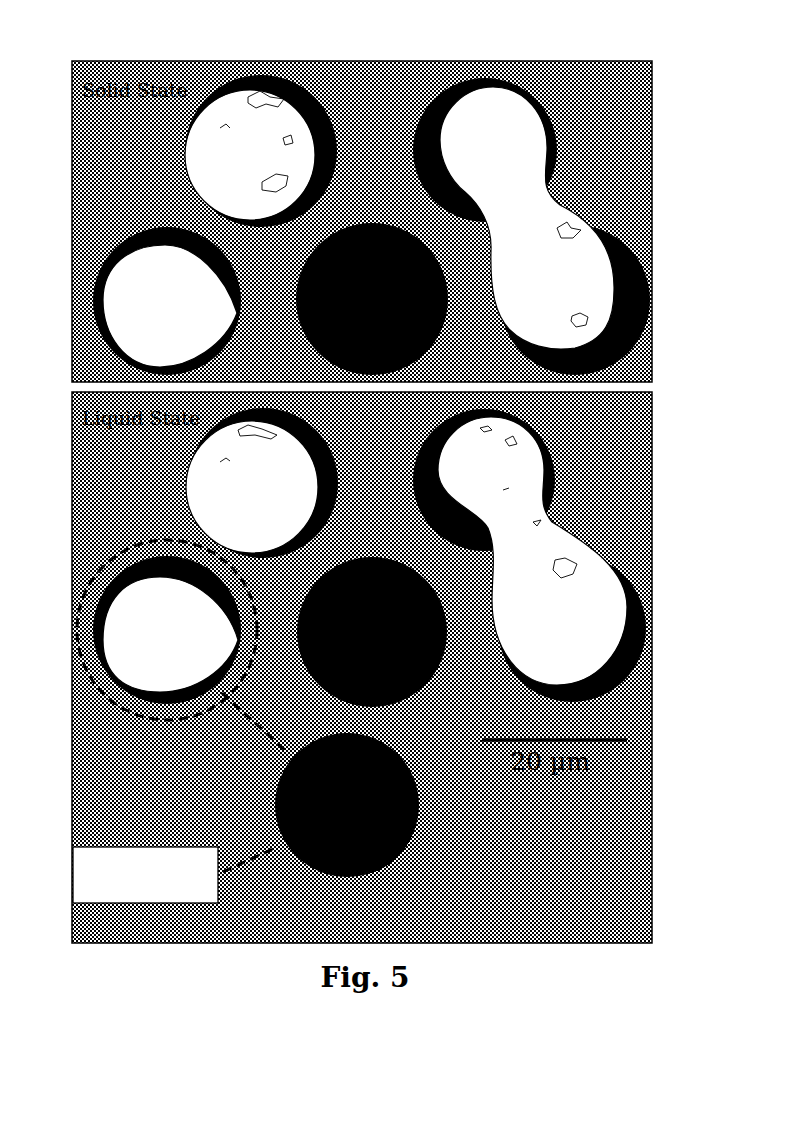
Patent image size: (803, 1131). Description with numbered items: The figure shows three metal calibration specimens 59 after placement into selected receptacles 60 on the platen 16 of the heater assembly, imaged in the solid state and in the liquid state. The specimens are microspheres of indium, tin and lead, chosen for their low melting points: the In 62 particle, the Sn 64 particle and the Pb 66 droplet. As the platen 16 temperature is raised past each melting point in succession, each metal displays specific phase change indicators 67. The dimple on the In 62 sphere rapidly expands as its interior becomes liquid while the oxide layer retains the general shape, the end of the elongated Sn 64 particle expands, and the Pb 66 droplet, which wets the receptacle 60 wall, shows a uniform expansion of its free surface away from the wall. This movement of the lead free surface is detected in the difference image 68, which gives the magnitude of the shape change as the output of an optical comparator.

The platen 16 is at (607, 497).
The calibration specimens 59 is at (212, 487).
The receptacles 60 is at (388, 270).
The In particle 62 is at (212, 181).
The Sn particle 64 is at (538, 301).
The Pb droplet 66 is at (148, 340).
The phase change indicators 67 is at (283, 190).
The difference image 68 is at (323, 806).